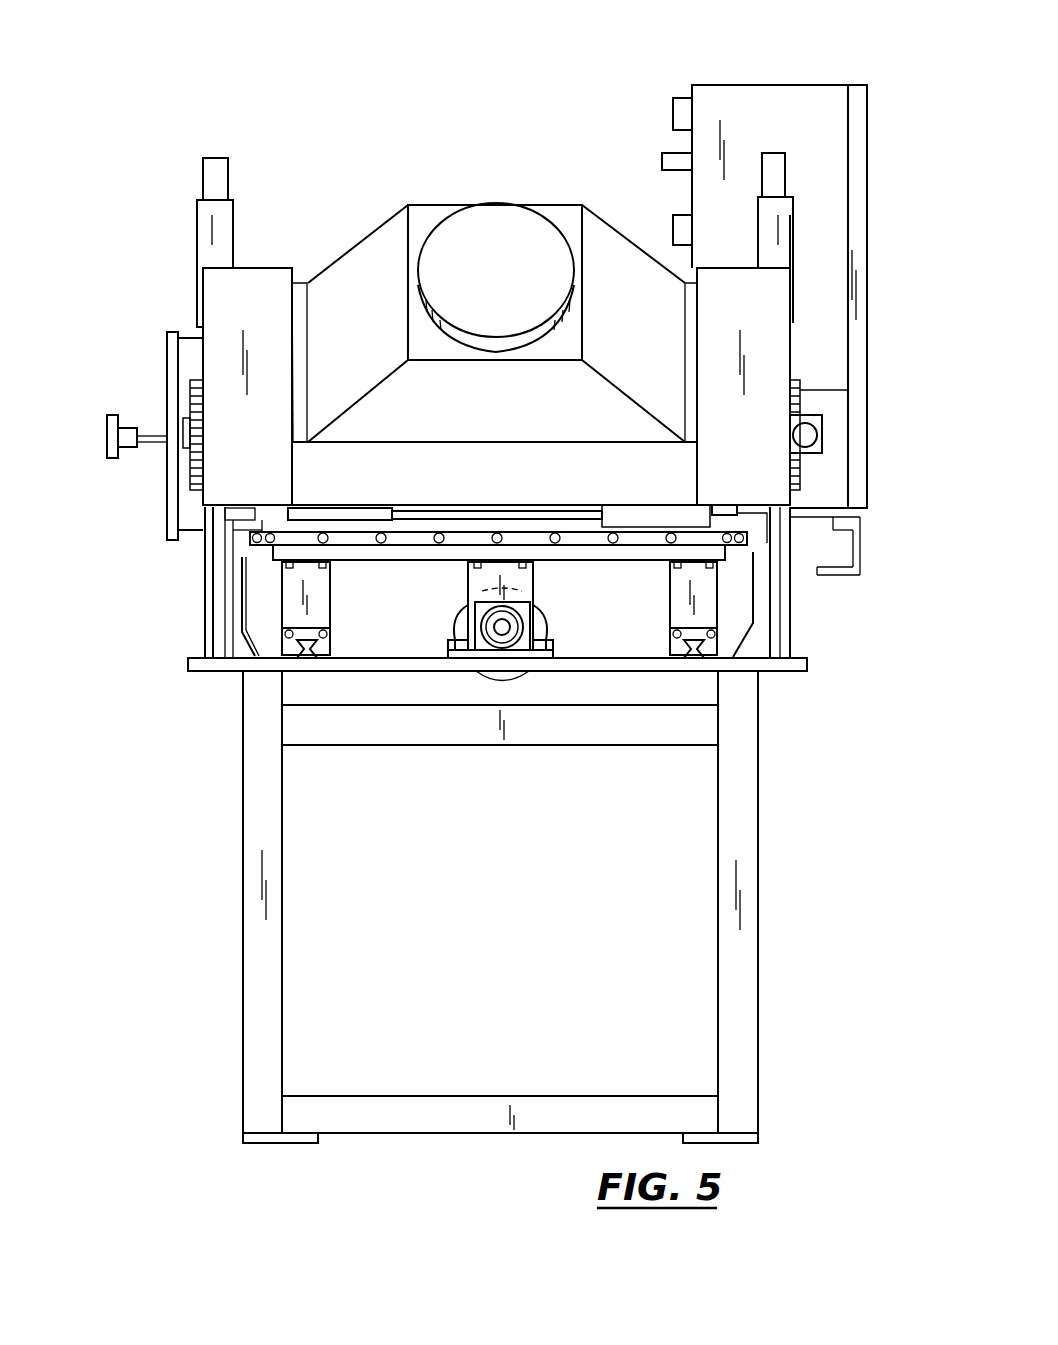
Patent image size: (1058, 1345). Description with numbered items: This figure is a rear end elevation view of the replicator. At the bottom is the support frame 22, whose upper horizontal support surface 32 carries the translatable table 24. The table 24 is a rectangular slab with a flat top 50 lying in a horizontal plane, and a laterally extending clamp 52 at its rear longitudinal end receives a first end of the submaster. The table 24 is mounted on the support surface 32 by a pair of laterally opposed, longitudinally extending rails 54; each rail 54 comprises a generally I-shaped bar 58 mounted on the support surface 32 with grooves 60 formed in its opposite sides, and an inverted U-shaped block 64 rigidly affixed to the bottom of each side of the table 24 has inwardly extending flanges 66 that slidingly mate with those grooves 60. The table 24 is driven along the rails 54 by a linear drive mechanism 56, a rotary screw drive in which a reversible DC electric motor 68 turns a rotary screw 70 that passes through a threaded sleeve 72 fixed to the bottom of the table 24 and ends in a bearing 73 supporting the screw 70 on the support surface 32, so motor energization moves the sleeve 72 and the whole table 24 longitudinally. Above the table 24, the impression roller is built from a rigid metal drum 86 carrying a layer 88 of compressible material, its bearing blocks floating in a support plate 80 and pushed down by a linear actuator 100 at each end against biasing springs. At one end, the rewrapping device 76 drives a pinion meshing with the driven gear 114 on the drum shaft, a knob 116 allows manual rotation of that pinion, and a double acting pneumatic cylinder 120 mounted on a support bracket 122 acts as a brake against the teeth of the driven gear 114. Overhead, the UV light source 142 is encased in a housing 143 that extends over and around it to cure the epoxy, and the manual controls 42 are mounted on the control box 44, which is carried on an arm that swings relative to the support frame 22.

The support frame 22 is at (768, 868).
The table 24 is at (235, 550).
The upper horizontal support surface 32 is at (188, 663).
The manual controls 42 is at (673, 102).
The control box 44 is at (800, 48).
The flat top 50 is at (258, 537).
The clamp 52 is at (342, 540).
The rails 54 is at (296, 672).
The linear drive mechanism 56 is at (445, 619).
The I-shaped bar 58 is at (315, 662).
The grooves 60 is at (282, 648).
The inverted U-shaped block 64 is at (325, 585).
The flanges 66 is at (330, 638).
The reversible DC electric motor 68 is at (533, 608).
The rotary screw 70 is at (500, 632).
The threaded sleeve 72 is at (468, 585).
The bearing 73 is at (525, 627).
The rewrapping device 76 is at (180, 503).
The support plate 80 is at (172, 332).
The drum 86 is at (700, 512).
The layer 88 is at (540, 520).
The linear actuator 100 is at (203, 215).
The driven gear 114 is at (193, 475).
The knob 116 is at (107, 430).
The double acting pneumatic cylinder 120 is at (805, 435).
The support bracket 122 is at (822, 418).
The UV light source 142 is at (497, 213).
The housing 143 is at (378, 238).